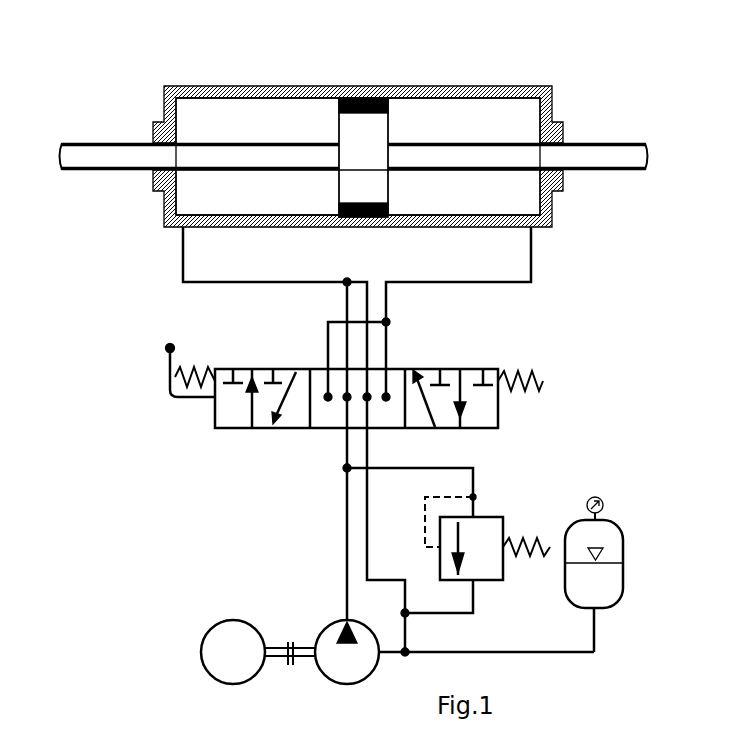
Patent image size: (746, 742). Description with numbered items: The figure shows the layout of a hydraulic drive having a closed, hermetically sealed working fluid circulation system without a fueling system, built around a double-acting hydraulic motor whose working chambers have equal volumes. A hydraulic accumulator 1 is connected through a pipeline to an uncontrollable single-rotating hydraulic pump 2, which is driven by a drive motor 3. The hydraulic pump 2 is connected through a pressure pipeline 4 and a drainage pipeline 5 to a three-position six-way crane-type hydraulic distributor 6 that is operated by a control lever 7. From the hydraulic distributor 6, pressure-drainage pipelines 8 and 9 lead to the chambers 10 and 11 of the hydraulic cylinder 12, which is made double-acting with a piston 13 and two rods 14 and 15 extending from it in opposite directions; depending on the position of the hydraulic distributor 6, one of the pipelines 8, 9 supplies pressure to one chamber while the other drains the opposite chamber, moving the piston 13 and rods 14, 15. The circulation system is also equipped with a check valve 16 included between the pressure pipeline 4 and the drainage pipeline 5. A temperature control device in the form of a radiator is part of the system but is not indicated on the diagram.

The hydraulic accumulator 1 is at (613, 555).
The hydraulic pump 2 is at (333, 668).
The drive motor 3 is at (218, 668).
The pressure pipeline 4 is at (345, 557).
The drainage pipeline 5 is at (368, 557).
The hydraulic distributor 6 is at (474, 369).
The control lever 7 is at (167, 345).
The pressure-drainage pipeline 8 is at (185, 272).
The pressure-drainage pipeline 9 is at (533, 272).
The chamber 10 is at (215, 112).
The chamber 11 is at (492, 110).
The hydraulic cylinder 12 is at (313, 86).
The piston 13 is at (392, 86).
The rod 14 is at (72, 142).
The rod 15 is at (620, 143).
The check valve 16 is at (485, 525).